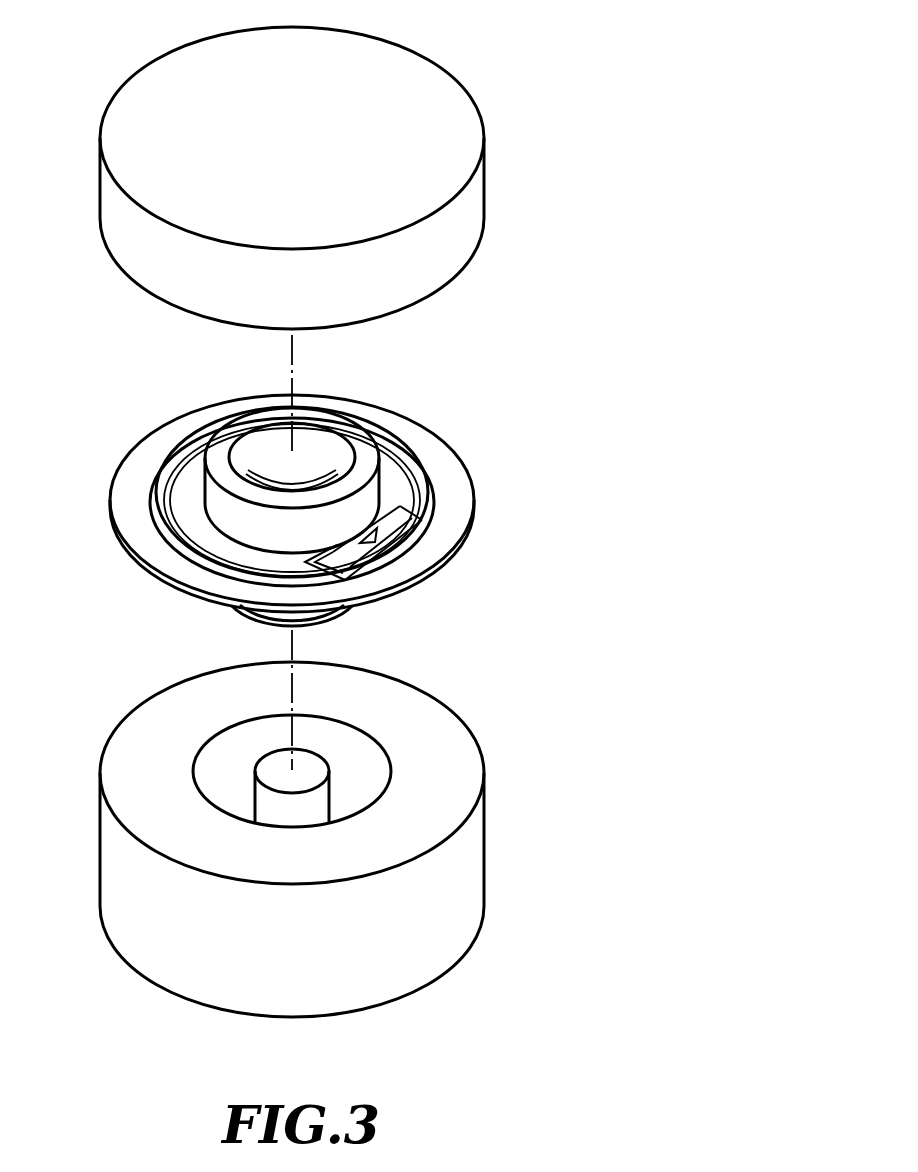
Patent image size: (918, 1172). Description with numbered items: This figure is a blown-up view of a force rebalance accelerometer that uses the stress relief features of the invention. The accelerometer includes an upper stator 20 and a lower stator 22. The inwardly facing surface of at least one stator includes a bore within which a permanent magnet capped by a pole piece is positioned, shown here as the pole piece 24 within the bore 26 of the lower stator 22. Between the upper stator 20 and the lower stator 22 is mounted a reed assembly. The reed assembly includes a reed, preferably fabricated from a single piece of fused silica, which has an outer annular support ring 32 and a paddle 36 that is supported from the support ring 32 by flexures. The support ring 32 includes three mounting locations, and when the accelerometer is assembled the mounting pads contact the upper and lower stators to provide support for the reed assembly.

The upper stator 20 is at (472, 222).
The lower stator 22 is at (465, 878).
The pole piece 24 is at (313, 765).
The bore 26 is at (357, 777).
The outer annular support ring 32 is at (136, 482).
The paddle 36 is at (160, 519).